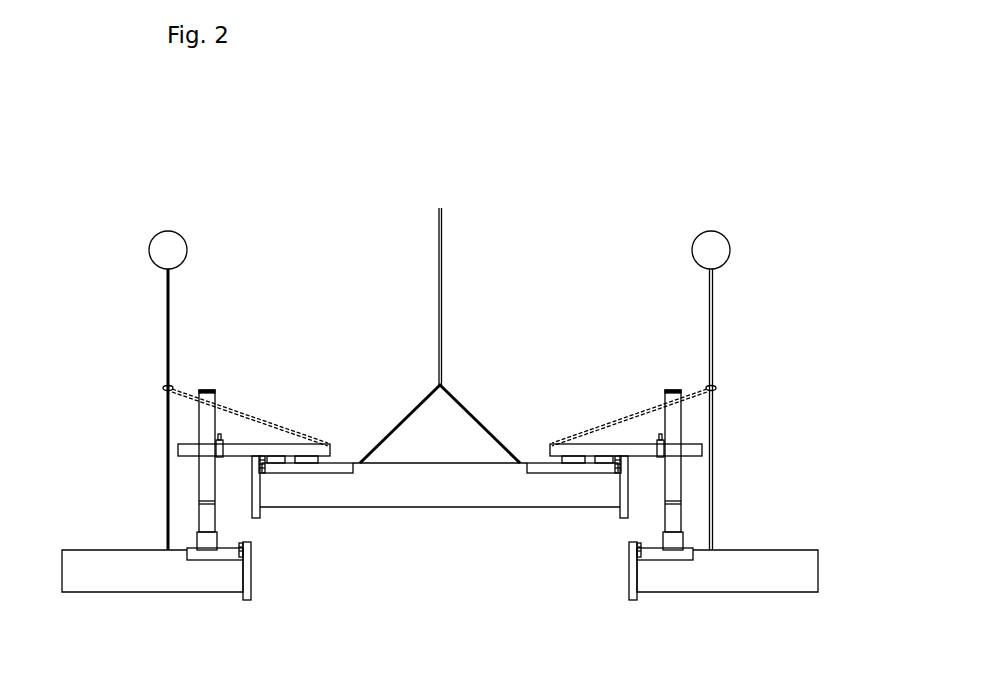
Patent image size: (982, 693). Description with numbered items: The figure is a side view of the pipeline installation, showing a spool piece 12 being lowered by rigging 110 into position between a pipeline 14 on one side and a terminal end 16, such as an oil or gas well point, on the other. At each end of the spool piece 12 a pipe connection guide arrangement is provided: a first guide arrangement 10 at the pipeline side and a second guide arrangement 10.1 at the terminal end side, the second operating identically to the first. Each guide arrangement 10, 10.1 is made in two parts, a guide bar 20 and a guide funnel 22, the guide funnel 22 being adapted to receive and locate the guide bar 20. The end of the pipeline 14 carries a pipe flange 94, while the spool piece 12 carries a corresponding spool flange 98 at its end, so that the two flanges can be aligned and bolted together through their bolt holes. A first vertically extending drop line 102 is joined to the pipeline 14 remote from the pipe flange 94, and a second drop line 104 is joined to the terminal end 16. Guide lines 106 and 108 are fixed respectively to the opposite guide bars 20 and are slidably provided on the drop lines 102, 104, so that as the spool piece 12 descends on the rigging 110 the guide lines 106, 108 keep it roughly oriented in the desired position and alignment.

The pipe connection guide arrangement 10 is at (175, 469).
The second guide arrangement 10.1 is at (697, 480).
The spool piece 12 is at (427, 497).
The pipeline 14 is at (110, 577).
The terminal end 16 is at (720, 580).
The guide bar 20 is at (238, 450).
The guide funnel 22 is at (207, 398).
The pipe flange 94 is at (248, 600).
The spool flange 98 is at (258, 513).
The first drop line 102 is at (167, 310).
The second drop line 104 is at (713, 310).
The guide line 106 is at (288, 430).
The guide line 108 is at (593, 430).
The rigging 110 is at (441, 243).